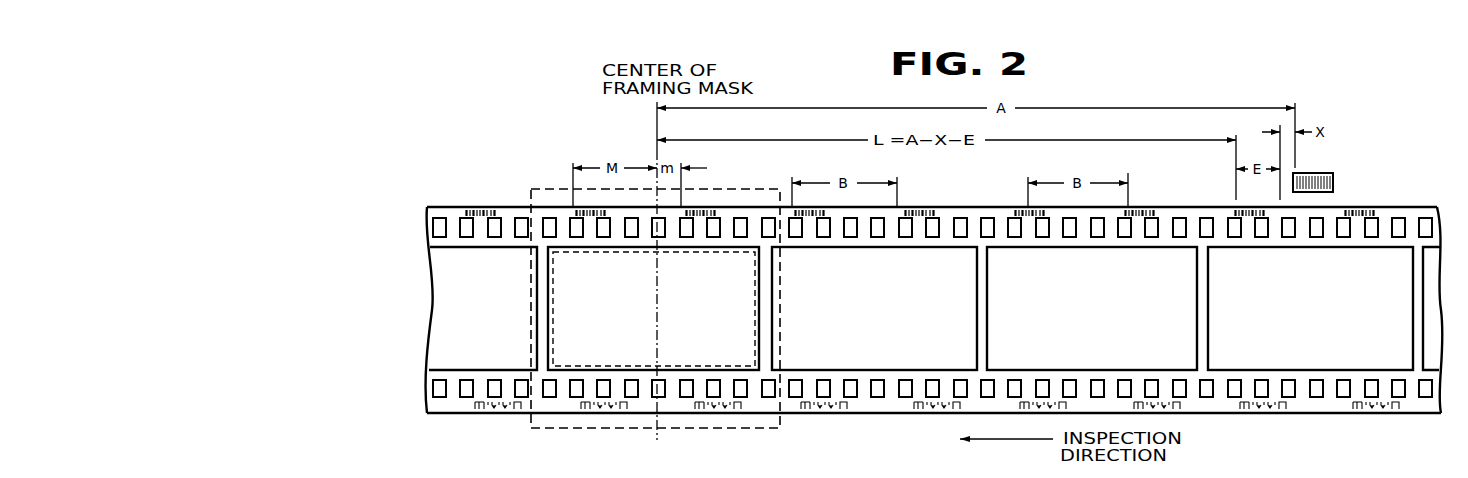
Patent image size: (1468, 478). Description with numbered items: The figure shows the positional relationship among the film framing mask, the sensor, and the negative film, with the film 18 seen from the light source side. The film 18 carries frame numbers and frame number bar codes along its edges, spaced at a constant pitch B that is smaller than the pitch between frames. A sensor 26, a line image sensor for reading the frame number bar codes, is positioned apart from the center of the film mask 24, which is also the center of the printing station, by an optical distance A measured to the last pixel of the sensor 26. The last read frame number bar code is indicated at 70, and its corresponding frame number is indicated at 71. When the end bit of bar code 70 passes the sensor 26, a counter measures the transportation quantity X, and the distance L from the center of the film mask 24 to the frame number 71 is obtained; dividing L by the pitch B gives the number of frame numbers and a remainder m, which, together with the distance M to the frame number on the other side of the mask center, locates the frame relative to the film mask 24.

The film 18 is at (451, 272).
The film mask 24 is at (583, 430).
The sensor 26 is at (1322, 173).
The last read frame number bar code 70 is at (1273, 217).
The frame number 71 is at (1222, 207).